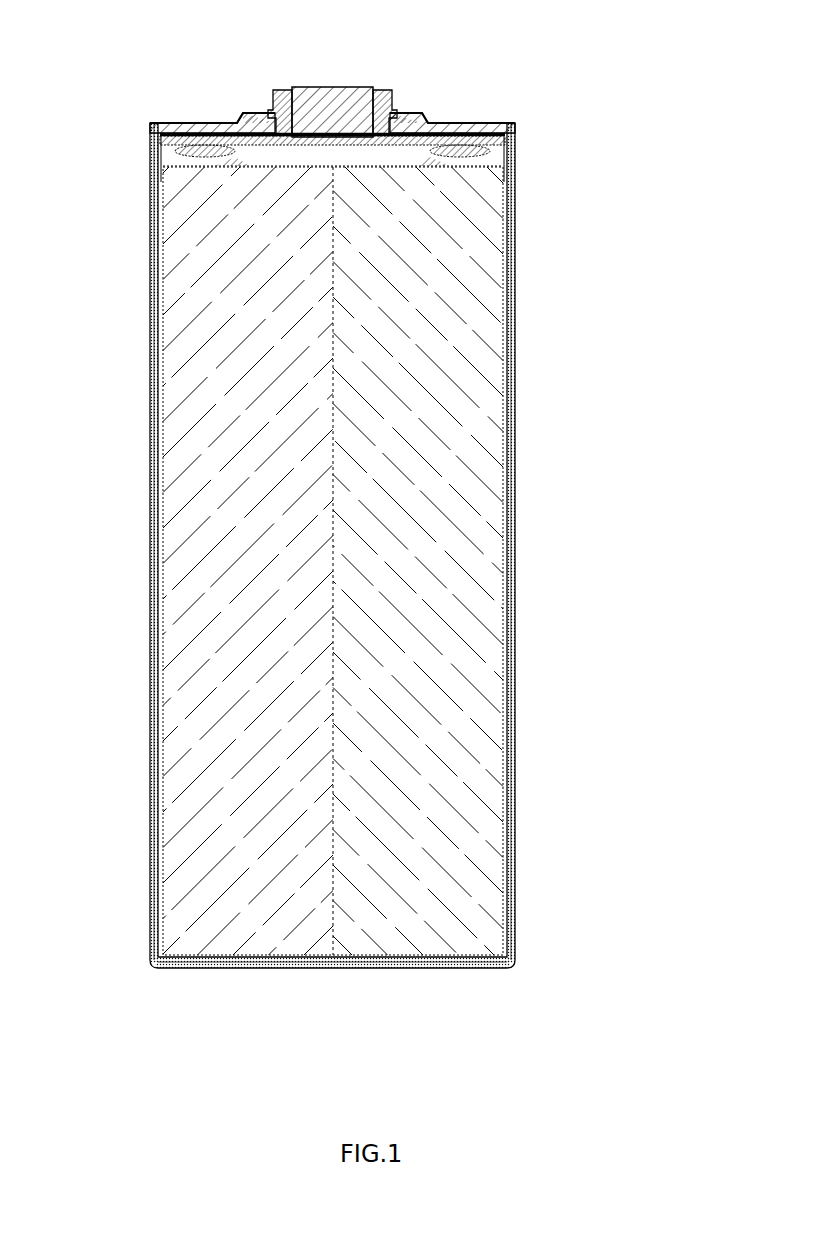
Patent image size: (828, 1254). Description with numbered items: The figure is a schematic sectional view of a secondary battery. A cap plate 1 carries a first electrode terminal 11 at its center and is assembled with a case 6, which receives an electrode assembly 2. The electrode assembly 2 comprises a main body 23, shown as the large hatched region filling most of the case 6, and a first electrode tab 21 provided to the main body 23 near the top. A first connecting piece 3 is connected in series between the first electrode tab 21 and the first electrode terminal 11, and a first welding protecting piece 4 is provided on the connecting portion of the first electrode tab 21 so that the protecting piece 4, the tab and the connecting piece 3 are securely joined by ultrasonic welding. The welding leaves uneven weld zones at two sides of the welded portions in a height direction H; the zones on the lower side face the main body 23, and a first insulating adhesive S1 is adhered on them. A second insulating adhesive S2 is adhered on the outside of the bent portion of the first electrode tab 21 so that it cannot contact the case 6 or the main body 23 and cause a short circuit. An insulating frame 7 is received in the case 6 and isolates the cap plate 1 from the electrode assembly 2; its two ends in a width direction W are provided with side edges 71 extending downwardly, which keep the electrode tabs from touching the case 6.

The cap plate 1 is at (205, 125).
The first electrode terminal 11 is at (360, 92).
The electrode assembly 2 is at (105, 180).
The first electrode tab 21 is at (150, 160).
The main body 23 is at (182, 300).
The first connecting piece 3 is at (312, 140).
The first welding protecting piece 4 is at (203, 143).
The case 6 is at (518, 385).
The insulating frame 7 is at (414, 115).
The side edges 71 is at (168, 150).
The first insulating adhesive S1 is at (243, 148).
The second insulating adhesive S2 is at (160, 125).
The height direction H is at (655, 503).
The width direction W is at (396, 1065).